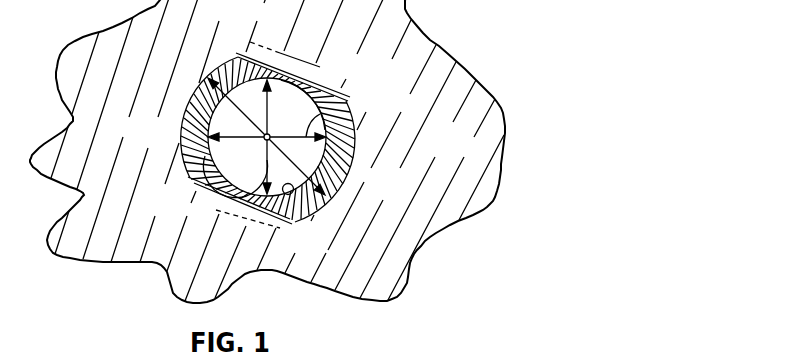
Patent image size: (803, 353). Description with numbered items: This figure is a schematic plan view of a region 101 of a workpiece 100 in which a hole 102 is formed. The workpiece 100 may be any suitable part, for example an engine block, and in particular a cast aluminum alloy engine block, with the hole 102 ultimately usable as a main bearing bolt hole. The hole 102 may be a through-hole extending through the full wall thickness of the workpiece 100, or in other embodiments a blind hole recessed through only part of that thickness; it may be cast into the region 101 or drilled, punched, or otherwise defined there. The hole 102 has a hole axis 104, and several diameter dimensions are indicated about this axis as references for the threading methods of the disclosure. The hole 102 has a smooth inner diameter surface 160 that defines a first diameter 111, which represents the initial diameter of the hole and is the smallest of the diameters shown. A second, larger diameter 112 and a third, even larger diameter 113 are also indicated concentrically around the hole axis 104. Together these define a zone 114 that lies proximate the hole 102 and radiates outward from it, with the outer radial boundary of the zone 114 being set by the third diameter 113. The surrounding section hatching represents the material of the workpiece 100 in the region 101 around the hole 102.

The workpiece 100 is at (420, 64).
The region 101 is at (470, 153).
The hole 102 is at (316, 159).
The hole axis 104 is at (322, 78).
The first diameter 111 is at (212, 195).
The second diameter 112 is at (345, 105).
The third diameter 113 is at (199, 135).
The zone 114 is at (260, 58).
The smooth inner diameter surface 160 is at (291, 194).